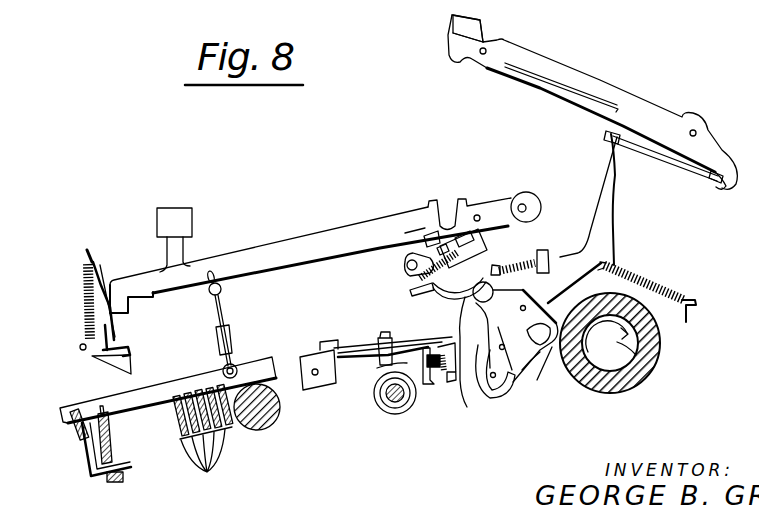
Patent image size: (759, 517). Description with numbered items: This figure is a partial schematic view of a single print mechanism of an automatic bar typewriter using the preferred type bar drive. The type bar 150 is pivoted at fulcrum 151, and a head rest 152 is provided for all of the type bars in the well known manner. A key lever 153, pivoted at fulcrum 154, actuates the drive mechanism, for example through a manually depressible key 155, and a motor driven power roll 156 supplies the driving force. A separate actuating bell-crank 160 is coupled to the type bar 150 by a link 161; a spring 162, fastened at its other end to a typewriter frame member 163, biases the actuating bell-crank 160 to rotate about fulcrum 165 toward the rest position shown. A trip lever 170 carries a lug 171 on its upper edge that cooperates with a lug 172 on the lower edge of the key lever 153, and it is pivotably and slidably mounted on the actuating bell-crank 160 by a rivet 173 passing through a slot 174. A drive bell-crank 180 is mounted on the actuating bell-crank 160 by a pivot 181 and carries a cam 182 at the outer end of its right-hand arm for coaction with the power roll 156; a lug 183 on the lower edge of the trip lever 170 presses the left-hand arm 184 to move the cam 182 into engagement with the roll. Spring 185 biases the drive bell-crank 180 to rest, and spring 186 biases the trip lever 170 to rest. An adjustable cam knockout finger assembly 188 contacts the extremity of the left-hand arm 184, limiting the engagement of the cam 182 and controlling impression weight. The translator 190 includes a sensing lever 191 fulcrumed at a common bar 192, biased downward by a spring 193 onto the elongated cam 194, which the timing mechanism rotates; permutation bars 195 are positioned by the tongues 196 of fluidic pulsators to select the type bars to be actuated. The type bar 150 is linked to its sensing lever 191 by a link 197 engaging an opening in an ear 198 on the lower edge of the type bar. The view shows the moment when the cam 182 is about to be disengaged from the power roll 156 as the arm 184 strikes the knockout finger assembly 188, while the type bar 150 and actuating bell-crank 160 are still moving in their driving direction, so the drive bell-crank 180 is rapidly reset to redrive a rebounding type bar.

The type bar 150 is at (589, 85).
The fulcrum 151 is at (698, 129).
The head rest 152 is at (492, 75).
The key lever 153 is at (282, 255).
The fulcrum 154 is at (523, 203).
The key 155 is at (178, 220).
The power roll 156 is at (661, 360).
The actuating bell-crank 160 is at (604, 211).
The link 161 is at (672, 167).
The spring 162 is at (640, 278).
The typewriter frame member 163 is at (691, 316).
The fulcrum 165 is at (483, 350).
The trip lever 170 is at (495, 207).
The lug 171 is at (427, 240).
The lug 172 is at (423, 203).
The rivet 173 is at (407, 267).
The slot 174 is at (440, 252).
The drive bell-crank 180 is at (518, 382).
The pivot 181 is at (468, 388).
The cam 182 is at (522, 358).
The lug 183 is at (495, 236).
The left-hand arm 184 is at (440, 300).
The spring 185 is at (535, 254).
The spring 186 is at (428, 292).
The adjustable cam knockout finger assembly 188 is at (371, 395).
The translator 190 is at (163, 468).
The sensing lever 191 is at (100, 397).
The common bar 192 is at (72, 437).
The spring 193 is at (117, 451).
The elongated cam 194 is at (263, 430).
The permutation bars 195 is at (178, 426).
The tongues 196 is at (215, 463).
The link 197 is at (228, 316).
The ear 198 is at (222, 286).